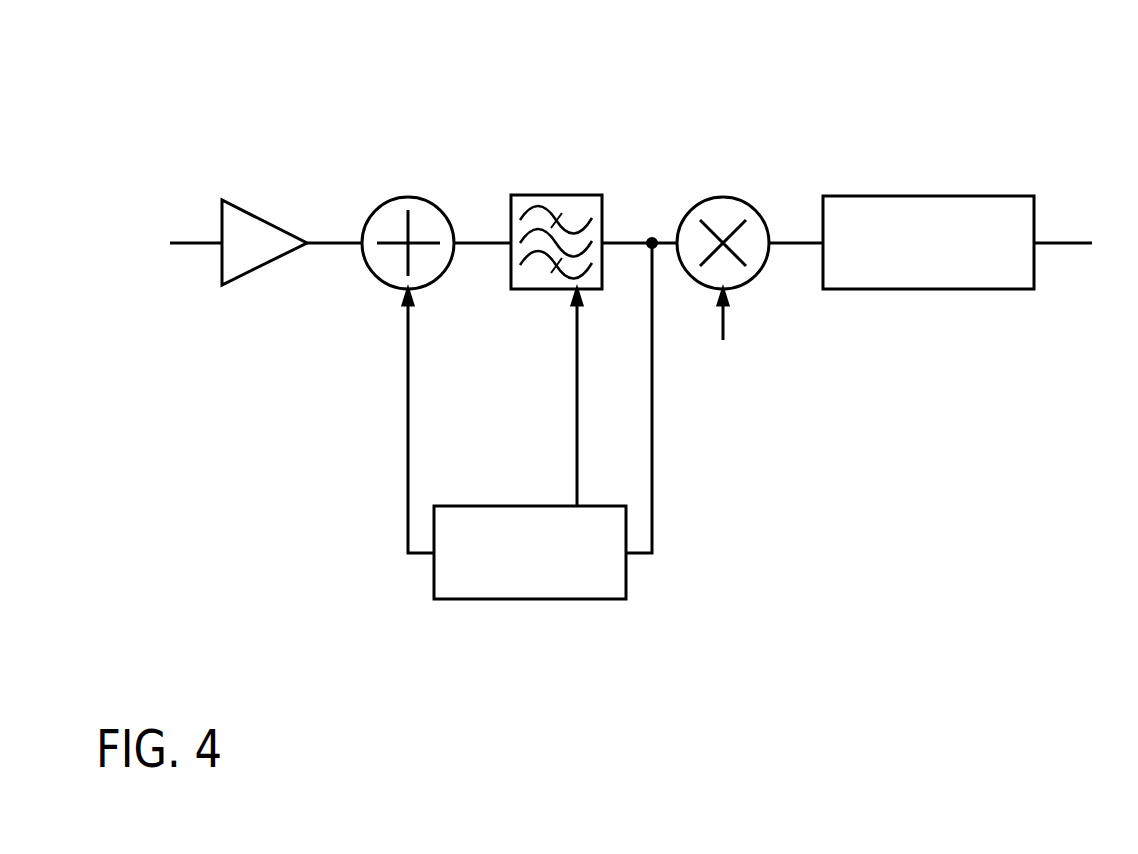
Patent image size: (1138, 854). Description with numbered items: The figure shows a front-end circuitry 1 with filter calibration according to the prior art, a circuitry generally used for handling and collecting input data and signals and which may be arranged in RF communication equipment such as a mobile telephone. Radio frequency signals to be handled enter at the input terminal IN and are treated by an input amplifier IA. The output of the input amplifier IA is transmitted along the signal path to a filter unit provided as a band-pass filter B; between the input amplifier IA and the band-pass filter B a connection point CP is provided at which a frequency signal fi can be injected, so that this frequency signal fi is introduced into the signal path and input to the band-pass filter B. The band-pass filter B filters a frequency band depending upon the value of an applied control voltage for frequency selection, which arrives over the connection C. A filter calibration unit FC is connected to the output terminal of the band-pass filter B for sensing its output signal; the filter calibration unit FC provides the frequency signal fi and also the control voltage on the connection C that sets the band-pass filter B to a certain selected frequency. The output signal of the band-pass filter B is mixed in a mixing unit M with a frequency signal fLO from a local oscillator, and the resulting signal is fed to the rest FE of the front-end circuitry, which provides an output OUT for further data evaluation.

The front-end circuitry 1 is at (459, 116).
The input terminal IN is at (183, 250).
The input amplifier IA is at (248, 213).
The connection point CP is at (408, 196).
The frequency signal fi is at (405, 421).
The band-pass filter B is at (521, 195).
The connection C is at (577, 364).
The mixing unit M is at (722, 196).
The local oscillator frequency signal fLO is at (719, 330).
The rest of the front-end circuitry FE is at (918, 196).
The output OUT is at (1080, 218).
The filter calibration unit FC is at (487, 600).